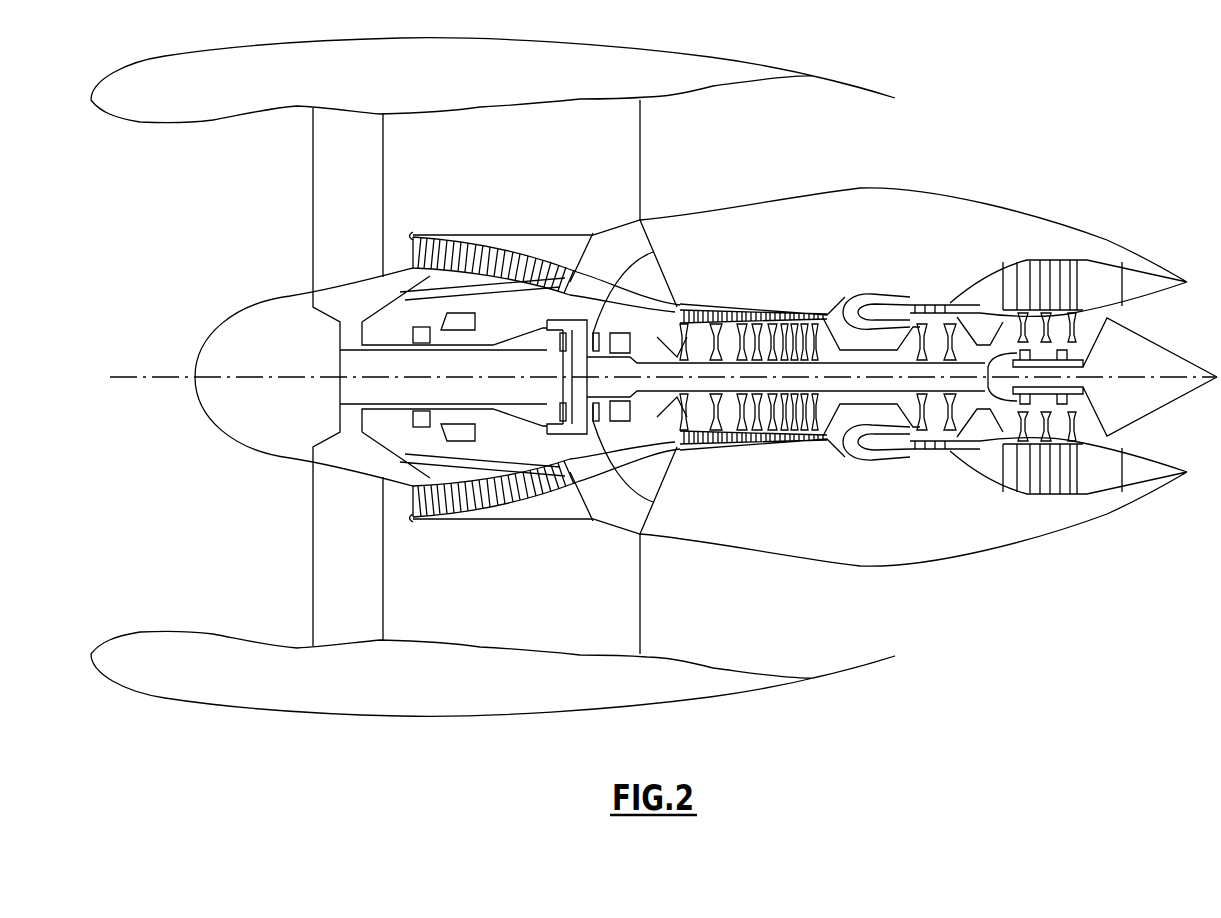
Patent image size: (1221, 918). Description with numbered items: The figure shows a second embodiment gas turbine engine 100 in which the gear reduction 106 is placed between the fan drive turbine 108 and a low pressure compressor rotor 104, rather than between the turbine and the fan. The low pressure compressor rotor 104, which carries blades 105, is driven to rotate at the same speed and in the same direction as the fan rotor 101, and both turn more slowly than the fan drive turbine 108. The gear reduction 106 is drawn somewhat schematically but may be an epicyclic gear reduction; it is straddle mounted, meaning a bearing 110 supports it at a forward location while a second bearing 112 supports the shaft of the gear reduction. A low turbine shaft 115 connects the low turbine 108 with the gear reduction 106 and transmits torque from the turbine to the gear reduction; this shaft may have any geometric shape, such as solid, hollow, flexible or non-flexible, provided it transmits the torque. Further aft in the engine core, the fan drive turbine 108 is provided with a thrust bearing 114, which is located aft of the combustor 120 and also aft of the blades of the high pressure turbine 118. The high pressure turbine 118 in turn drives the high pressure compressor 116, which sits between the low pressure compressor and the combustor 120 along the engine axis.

The engine 100 is at (914, 78).
The fan rotor 101 is at (340, 195).
The low pressure compressor rotor 104 is at (390, 290).
The blades 105 is at (485, 250).
The gear reduction 106 is at (653, 252).
The fan drive turbine 108 is at (1070, 277).
The bearing 110 is at (506, 330).
The second bearing 112 is at (590, 517).
The thrust bearing 114 is at (1010, 407).
The low turbine shaft 115 is at (832, 382).
The high pressure compressor 116 is at (698, 318).
The high pressure turbine 118 is at (957, 300).
The combustor 120 is at (870, 312).